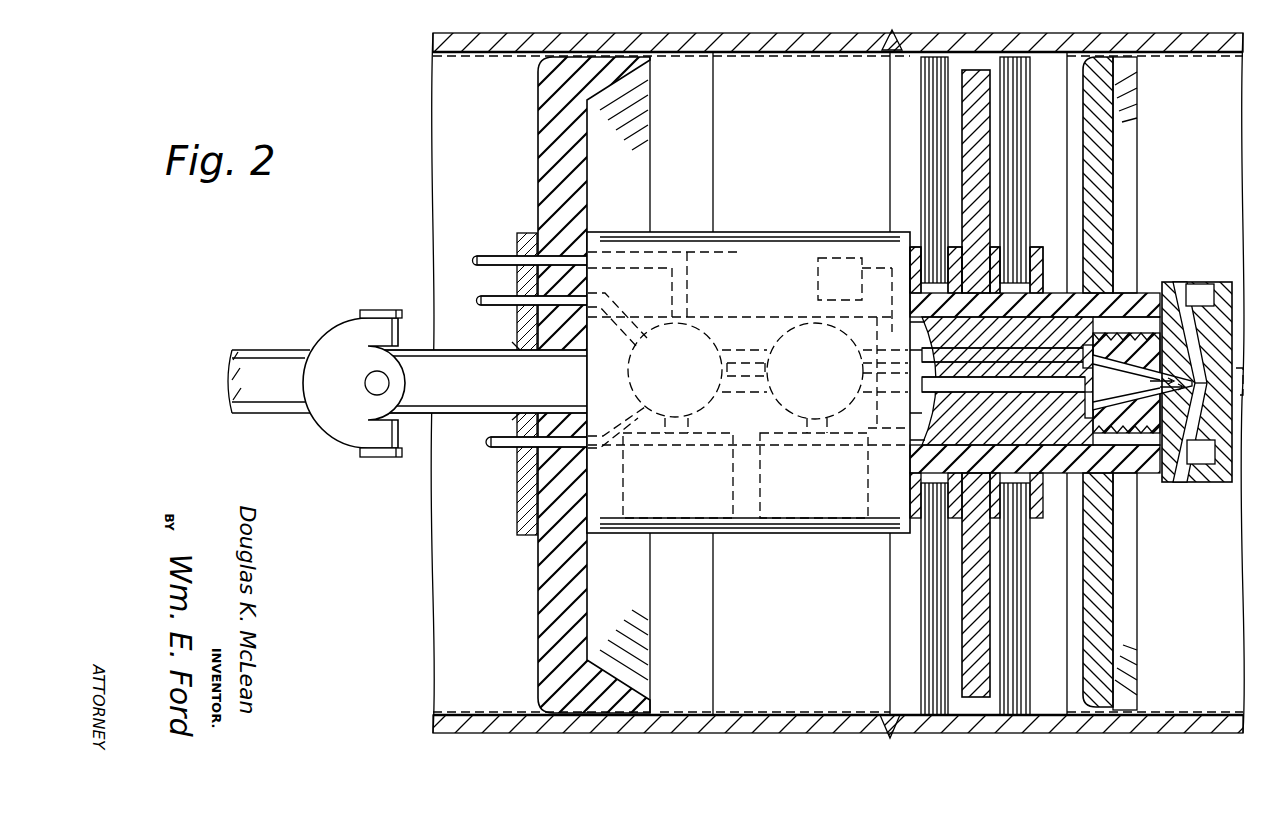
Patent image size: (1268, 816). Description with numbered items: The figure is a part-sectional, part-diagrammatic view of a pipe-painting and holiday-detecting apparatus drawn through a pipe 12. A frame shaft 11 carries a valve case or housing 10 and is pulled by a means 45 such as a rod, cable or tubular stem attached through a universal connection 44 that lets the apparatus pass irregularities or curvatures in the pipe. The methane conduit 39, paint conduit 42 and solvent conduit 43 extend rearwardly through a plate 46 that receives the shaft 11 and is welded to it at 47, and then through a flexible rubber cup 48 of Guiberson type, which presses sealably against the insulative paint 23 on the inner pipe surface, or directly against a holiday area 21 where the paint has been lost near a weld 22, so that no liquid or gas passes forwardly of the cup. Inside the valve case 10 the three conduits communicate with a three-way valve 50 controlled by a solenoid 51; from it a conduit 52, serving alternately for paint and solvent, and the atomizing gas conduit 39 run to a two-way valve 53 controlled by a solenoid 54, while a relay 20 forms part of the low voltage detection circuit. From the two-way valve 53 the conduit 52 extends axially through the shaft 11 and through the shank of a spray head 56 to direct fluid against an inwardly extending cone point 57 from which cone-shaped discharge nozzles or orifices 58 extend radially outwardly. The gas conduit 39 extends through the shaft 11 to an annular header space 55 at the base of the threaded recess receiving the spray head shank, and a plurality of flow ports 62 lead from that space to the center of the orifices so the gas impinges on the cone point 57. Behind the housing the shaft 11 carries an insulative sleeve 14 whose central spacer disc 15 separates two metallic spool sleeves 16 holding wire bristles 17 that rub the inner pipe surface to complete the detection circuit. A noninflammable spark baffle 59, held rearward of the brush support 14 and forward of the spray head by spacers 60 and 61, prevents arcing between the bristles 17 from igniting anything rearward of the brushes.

The valve case 10 is at (803, 533).
The frame shaft 11 is at (478, 390).
The pipe 12 is at (621, 33).
The insulative sleeve 14 is at (1007, 381).
The spacer disc 15 is at (963, 548).
The metallic spool sleeve 16 is at (1045, 518).
The wire bristles 17 is at (920, 658).
The relay 20 is at (856, 262).
The holiday area 21 is at (792, 55).
The weld 22 is at (890, 740).
The coated pipe surface 23 is at (482, 58).
The methane conduit 39 is at (492, 256).
The paint conduit 42 is at (485, 296).
The solvent conduit 43 is at (500, 448).
The universal connection 44 is at (362, 330).
The means for drawing the apparatus 45 is at (274, 350).
The plate 46 is at (517, 500).
The weld 47 is at (512, 345).
The flexible cup 48 is at (548, 572).
The three-way valve 50 is at (714, 338).
The solenoid 51 is at (690, 461).
The conduit 52 is at (733, 390).
The two-way valve 53 is at (800, 332).
The solenoid 54 is at (825, 461).
The annular header space 55 is at (1085, 410).
The spray head 56 is at (1229, 280).
The cone point 57 is at (1200, 408).
The discharge nozzles 58 is at (1210, 306).
The spark baffle 59 is at (1102, 134).
The spacer 60 is at (1053, 292).
The spacer 61 is at (1138, 293).
The flow ports 62 is at (1128, 396).